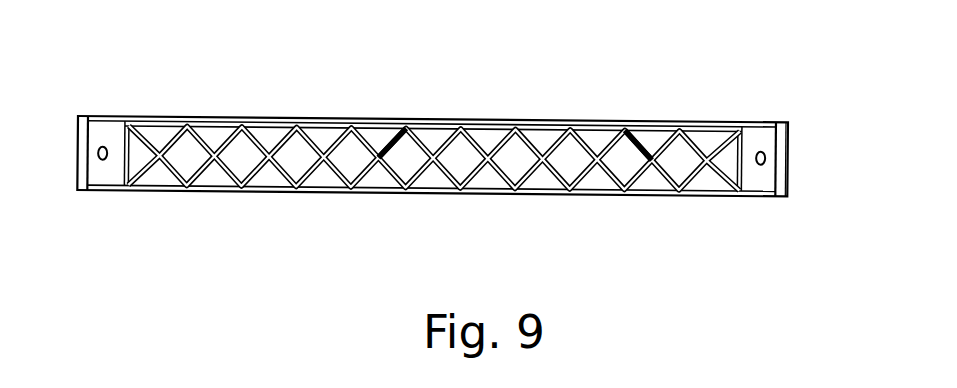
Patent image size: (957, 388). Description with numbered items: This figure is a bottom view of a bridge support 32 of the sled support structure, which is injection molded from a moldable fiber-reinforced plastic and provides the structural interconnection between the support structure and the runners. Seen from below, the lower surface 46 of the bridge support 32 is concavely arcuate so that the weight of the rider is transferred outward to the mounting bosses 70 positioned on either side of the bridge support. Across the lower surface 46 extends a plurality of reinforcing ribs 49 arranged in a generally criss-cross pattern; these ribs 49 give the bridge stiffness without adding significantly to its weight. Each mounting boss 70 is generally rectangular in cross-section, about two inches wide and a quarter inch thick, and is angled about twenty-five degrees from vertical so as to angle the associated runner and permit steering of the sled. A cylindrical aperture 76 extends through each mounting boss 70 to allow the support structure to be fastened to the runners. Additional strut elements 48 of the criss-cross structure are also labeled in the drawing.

The mounting boss 70 is at (789, 158).
The front bridge support 32 is at (647, 121).
The lower surface 46 is at (461, 158).
The diagonal strut 48 is at (299, 158).
The reinforcing rib 49 is at (373, 141).
The cylindrical aperture 76 is at (760, 153).